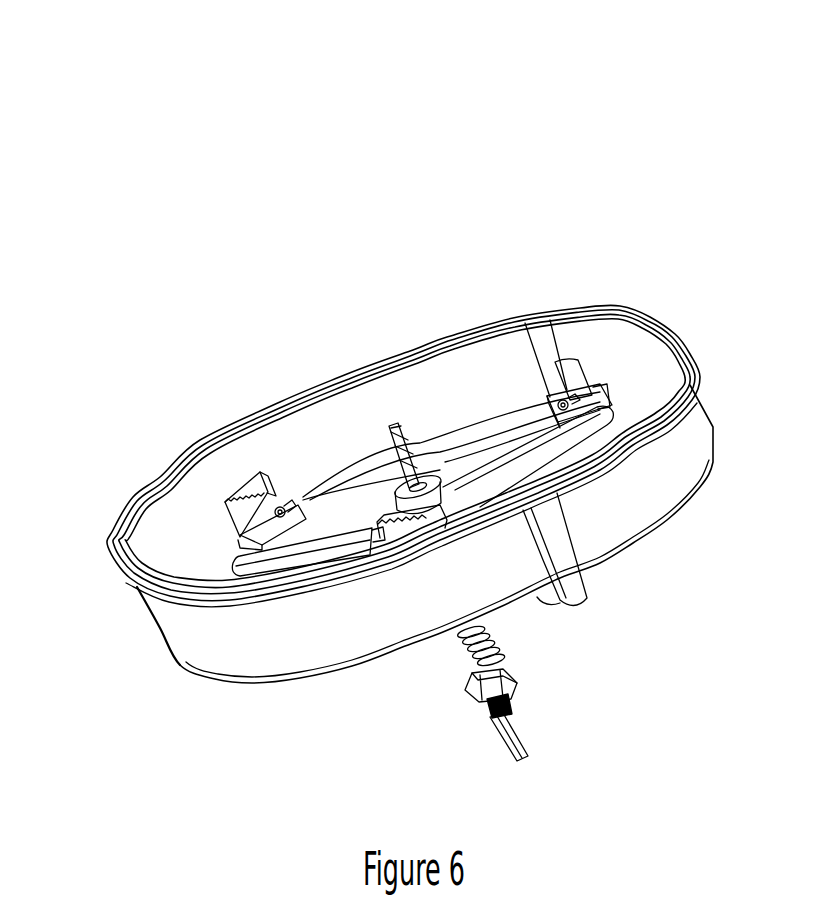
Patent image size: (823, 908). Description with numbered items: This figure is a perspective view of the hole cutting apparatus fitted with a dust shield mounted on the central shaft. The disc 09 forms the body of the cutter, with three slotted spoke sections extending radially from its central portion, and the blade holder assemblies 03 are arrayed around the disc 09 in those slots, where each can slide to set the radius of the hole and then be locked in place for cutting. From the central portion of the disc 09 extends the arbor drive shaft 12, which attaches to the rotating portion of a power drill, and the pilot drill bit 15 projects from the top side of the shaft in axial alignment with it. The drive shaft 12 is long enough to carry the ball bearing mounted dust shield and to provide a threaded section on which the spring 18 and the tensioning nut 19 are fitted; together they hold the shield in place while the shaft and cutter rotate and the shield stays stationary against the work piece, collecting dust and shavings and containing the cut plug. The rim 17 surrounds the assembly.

The blade holder assembly 03 is at (612, 395).
The disc 09 is at (367, 447).
The arbor drive shaft 12 is at (523, 755).
The pilot drill bit 15 is at (400, 418).
The rim 17 is at (447, 332).
The spring 18 is at (493, 640).
The tensioning nut 19 is at (530, 690).